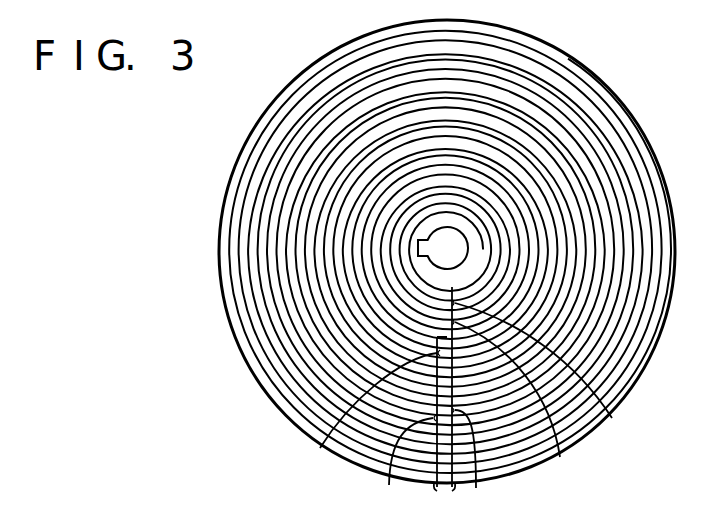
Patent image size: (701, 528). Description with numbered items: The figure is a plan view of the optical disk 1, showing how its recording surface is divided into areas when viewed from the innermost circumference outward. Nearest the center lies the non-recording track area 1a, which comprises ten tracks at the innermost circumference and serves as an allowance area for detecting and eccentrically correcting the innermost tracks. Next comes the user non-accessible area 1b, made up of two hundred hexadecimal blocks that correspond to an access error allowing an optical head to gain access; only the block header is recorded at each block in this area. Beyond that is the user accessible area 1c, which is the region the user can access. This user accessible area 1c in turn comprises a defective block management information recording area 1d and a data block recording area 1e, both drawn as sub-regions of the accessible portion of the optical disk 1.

The optical disk 1 is at (563, 57).
The non-recording track area 1a is at (612, 418).
The user non-accessible area 1b is at (560, 457).
The user accessible area 1c is at (475, 489).
The defective block management information recording area 1d is at (320, 448).
The data block recording area 1e is at (389, 485).